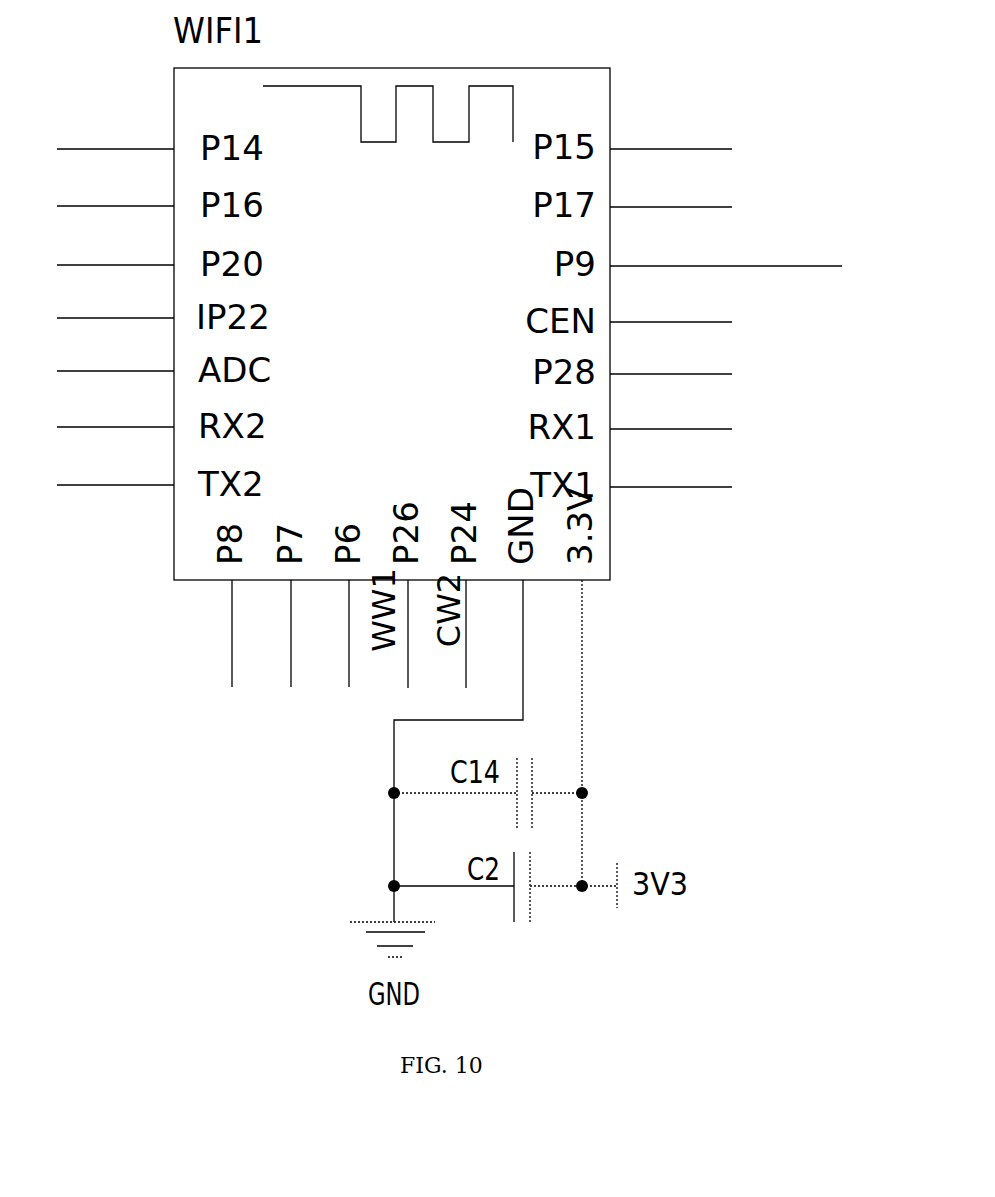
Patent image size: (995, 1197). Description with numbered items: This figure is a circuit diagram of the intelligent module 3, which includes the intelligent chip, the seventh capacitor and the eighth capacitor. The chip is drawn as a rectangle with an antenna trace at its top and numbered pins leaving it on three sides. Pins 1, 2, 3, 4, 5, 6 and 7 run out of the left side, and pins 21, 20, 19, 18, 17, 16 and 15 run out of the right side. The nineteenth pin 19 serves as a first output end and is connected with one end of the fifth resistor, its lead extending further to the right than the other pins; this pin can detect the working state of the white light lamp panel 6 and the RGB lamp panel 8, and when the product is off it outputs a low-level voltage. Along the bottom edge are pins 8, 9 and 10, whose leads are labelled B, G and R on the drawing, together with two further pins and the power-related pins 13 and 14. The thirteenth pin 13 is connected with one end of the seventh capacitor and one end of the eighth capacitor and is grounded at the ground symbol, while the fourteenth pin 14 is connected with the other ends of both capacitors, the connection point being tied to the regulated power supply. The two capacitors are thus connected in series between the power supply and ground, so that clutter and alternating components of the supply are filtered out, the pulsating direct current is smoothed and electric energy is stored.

The pin 1 (P14) 1 is at (115, 128).
The pin 2 (P16) 2 is at (115, 185).
The intelligent module 3 is at (115, 244).
The pin 4 (IP22) 4 is at (115, 298).
The pin 5 (ADC) 5 is at (115, 351).
The white light lamp panel 6 is at (115, 407).
The pin 7 (TX2) 7 is at (115, 465).
The RGB lamp panel 8 is at (207, 633).
The pin 9 (P7, G) 9 is at (268, 633).
The pin 10 (P6, R) 10 is at (327, 633).
The thirteenth pin 13 is at (458, 751).
The fourteenth pin 14 is at (562, 733).
The pin 15 (TX1) 15 is at (671, 468).
The pin 16 (RX1) 16 is at (671, 410).
The pin 17 (P28) 17 is at (671, 355).
The pin 18 (CEN) 18 is at (671, 303).
The nineteenth pin 19 is at (726, 244).
The pin 20 (P17) 20 is at (671, 188).
The pin 21 (P15) 21 is at (671, 130).